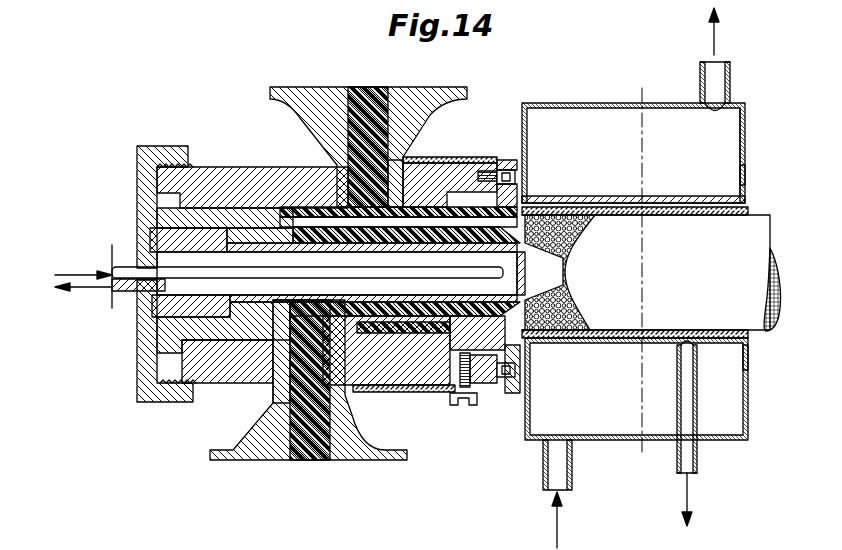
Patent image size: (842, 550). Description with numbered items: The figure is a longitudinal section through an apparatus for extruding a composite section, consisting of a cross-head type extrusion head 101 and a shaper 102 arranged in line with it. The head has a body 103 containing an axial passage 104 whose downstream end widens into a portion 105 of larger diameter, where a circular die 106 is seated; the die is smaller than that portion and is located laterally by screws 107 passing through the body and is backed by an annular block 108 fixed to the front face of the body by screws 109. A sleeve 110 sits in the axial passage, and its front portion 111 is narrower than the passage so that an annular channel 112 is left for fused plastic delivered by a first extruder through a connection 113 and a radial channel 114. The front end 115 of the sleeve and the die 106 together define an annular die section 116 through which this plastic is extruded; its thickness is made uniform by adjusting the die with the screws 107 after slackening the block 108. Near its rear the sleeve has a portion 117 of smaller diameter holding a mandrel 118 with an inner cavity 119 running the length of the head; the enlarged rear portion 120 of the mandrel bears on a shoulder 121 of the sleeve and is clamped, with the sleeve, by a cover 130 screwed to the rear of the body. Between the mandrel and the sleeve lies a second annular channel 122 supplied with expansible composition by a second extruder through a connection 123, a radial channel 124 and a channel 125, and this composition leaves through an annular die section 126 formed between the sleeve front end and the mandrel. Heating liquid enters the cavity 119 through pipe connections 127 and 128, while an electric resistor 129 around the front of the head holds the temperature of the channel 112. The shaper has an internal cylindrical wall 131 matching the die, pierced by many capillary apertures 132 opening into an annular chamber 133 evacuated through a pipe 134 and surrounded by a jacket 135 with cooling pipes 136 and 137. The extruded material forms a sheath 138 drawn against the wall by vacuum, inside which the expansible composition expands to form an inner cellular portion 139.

The extrusion head 101 is at (222, 163).
The shaper 102 is at (613, 102).
The body 103 is at (272, 166).
The axial passage 104 is at (175, 400).
The portion of larger diameter 105 is at (457, 170).
The die 106 is at (482, 390).
The screws 107 is at (470, 407).
The annular block 108 is at (505, 158).
The screws 109 is at (514, 397).
The sleeve 110 is at (318, 212).
The front portion 111 is at (386, 345).
The annular channel 112 is at (412, 152).
The connection 113 is at (440, 92).
The radial channel 114 is at (403, 173).
The front end 115 is at (545, 196).
The annular die section 116 is at (532, 212).
The portion of smaller diameter 117 is at (278, 168).
The mandrel 118 is at (240, 372).
The inner cavity 119 is at (213, 238).
The rear portion 120 is at (150, 335).
The shoulder 121 is at (145, 385).
The second annular channel 122 is at (443, 402).
The connection 123 is at (380, 453).
The radial channel 124 is at (274, 401).
The channel 125 is at (345, 443).
The annular die section 126 is at (536, 332).
The pipe connection 127 is at (113, 266).
The pipe connection 128 is at (127, 292).
The electric resistor 129 is at (480, 150).
The cover 130 is at (148, 165).
The internal cylindrical wall 131 is at (748, 374).
The capillary apertures 132 is at (657, 204).
The annular chamber 133 is at (745, 172).
The pipe 134 is at (697, 420).
The jacket 135 is at (731, 127).
The pipe 136 is at (552, 472).
The pipe 137 is at (722, 82).
The sheath 138 is at (727, 257).
The inner cellular portion 139 is at (752, 334).